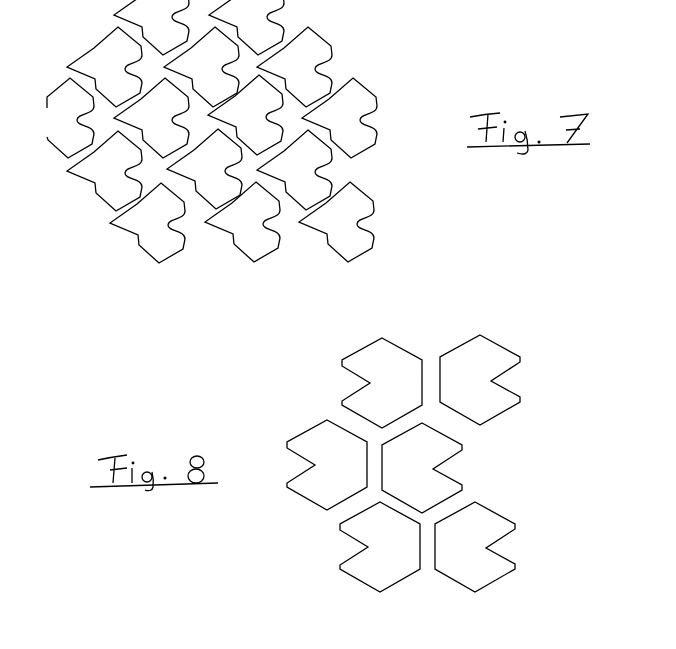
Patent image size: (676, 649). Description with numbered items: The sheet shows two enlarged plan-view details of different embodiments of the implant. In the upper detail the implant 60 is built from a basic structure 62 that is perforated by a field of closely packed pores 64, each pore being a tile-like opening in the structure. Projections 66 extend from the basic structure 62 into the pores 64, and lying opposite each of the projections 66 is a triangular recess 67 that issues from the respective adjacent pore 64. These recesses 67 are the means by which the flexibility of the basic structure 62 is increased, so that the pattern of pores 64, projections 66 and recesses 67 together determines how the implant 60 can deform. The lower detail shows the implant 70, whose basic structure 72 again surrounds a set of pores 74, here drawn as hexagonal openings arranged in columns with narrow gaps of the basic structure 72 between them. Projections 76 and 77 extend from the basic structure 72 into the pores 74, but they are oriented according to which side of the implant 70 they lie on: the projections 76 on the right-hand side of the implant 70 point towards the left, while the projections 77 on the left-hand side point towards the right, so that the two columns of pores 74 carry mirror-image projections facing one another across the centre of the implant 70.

In FIG. 7, the implant 60 is at (147, 322).
In FIG. 7, the basic structure 62 is at (302, 237).
In FIG. 7, the pores 64 is at (352, 17).
In FIG. 7, the projections 66 is at (400, 85).
In FIG. 7, the triangular recesses 67 is at (218, 262).
In FIG. 8, the implant 70 is at (240, 563).
In FIG. 8, the basic structure 72 is at (494, 306).
In FIG. 8, the pores 74 is at (423, 323).
In FIG. 8, the projections 76 is at (553, 372).
In FIG. 8, the projections 77 is at (362, 384).